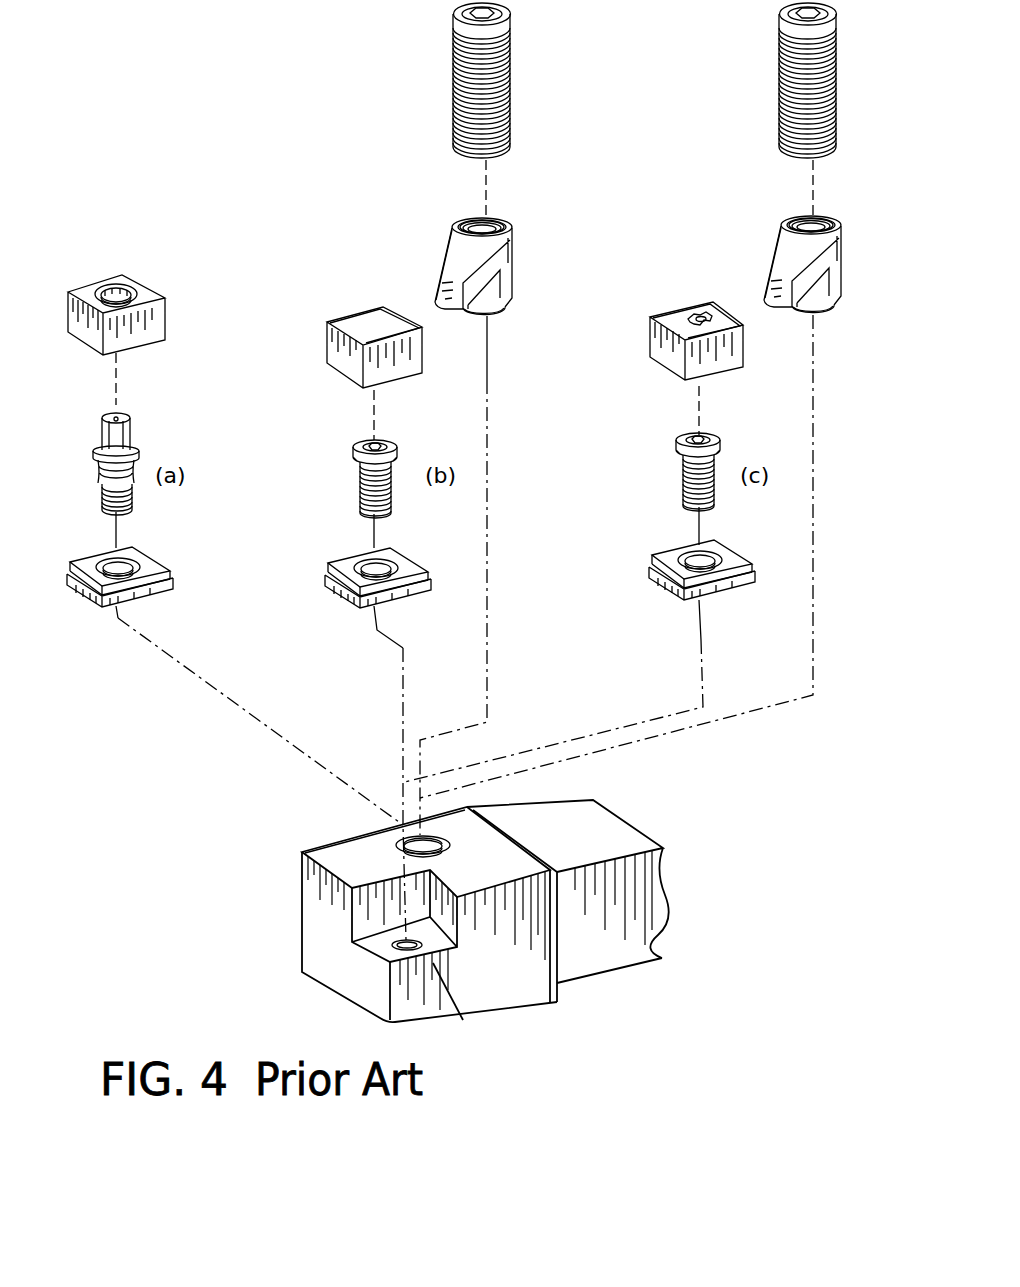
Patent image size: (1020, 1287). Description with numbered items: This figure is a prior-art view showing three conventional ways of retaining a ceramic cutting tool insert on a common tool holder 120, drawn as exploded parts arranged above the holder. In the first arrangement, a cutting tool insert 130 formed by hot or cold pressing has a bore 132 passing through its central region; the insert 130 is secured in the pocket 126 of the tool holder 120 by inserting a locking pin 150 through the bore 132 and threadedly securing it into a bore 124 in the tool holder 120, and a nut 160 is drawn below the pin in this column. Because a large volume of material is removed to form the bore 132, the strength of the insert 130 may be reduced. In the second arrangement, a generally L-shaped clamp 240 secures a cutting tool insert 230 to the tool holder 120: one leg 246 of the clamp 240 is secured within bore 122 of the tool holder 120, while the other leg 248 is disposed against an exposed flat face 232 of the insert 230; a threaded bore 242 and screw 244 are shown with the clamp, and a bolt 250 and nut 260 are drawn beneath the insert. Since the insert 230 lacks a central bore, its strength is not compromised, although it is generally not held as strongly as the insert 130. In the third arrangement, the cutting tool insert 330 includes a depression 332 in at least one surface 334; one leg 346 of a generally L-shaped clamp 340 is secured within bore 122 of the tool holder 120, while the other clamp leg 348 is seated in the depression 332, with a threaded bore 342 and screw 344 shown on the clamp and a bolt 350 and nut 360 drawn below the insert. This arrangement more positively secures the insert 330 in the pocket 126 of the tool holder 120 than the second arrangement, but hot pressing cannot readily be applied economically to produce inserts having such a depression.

The tool holder 120 is at (620, 968).
The bore 122 is at (457, 848).
The bore 124 is at (398, 940).
The pocket 126 is at (417, 887).
The cutting tool insert 130 is at (150, 340).
The bore 132 is at (132, 288).
The locking pin 150 is at (134, 462).
The nut 160 is at (150, 552).
The cutting tool insert 230 is at (330, 347).
The exposed flat face 232 is at (362, 316).
The L-shaped clamp 240 is at (512, 250).
The threaded bore of clamp body 242 is at (497, 220).
The threaded screw 244 is at (462, 78).
The leg 246 is at (498, 318).
The leg 248 is at (445, 267).
The socket head bolt 250 is at (360, 491).
The nut 260 is at (327, 572).
The cutting tool insert 330 is at (652, 360).
The depression 332 is at (676, 313).
The surface 334 is at (698, 306).
The L-shaped clamp 340 is at (842, 298).
The threaded bore of clamp body 342 is at (788, 220).
The threaded screw 344 is at (782, 107).
The leg 346 is at (803, 308).
The clamp leg 348 is at (773, 263).
The socket head bolt 350 is at (682, 476).
The nut 360 is at (650, 567).